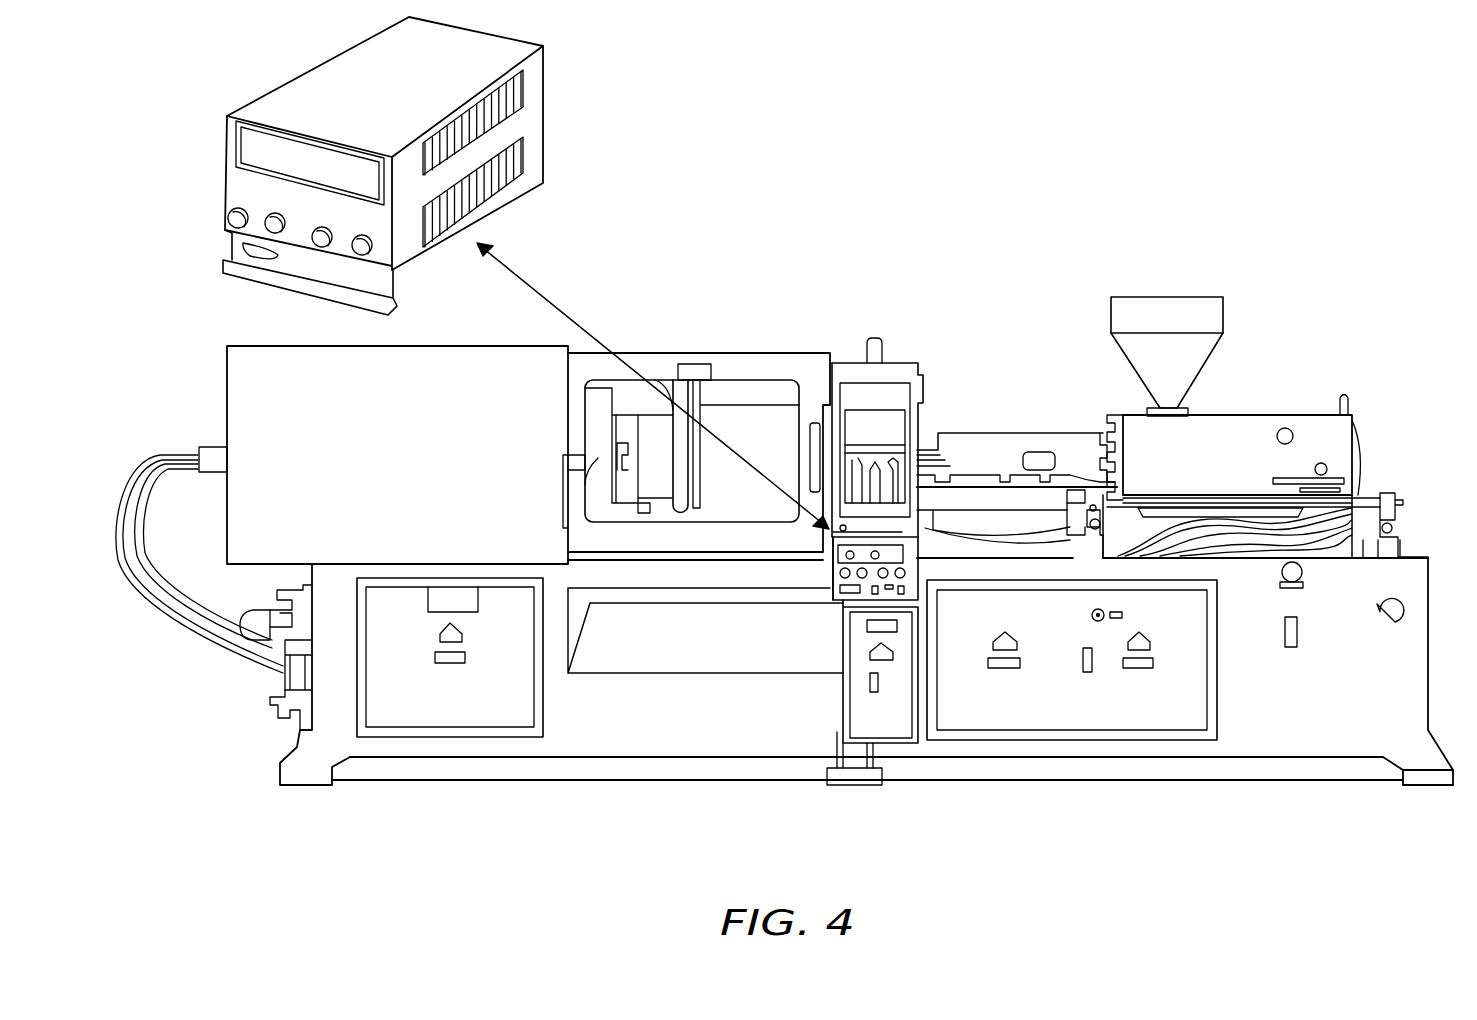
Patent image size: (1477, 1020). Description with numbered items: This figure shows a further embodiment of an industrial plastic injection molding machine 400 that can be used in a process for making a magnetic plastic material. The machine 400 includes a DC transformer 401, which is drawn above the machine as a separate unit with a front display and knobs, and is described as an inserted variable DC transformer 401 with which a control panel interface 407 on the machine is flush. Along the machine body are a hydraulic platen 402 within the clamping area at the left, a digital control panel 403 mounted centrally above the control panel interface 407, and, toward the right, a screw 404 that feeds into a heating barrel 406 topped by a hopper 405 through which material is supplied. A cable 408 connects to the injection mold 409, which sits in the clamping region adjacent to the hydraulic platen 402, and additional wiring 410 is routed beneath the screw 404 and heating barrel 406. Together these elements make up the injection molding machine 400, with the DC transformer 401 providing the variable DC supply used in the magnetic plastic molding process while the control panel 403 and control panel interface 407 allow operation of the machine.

The injection molding machine 400 is at (230, 812).
The DC transformer 401 is at (530, 105).
The hydraulic platen 402 is at (662, 438).
The digital control panel 403 is at (890, 410).
The screw 404 is at (1015, 473).
The hopper 405 is at (1225, 313).
The heating barrel 406 is at (1220, 418).
The control panel interface 407 is at (910, 598).
The cable 408 is at (700, 563).
The injection mold 409 is at (598, 458).
The additional wiring 410 is at (932, 550).